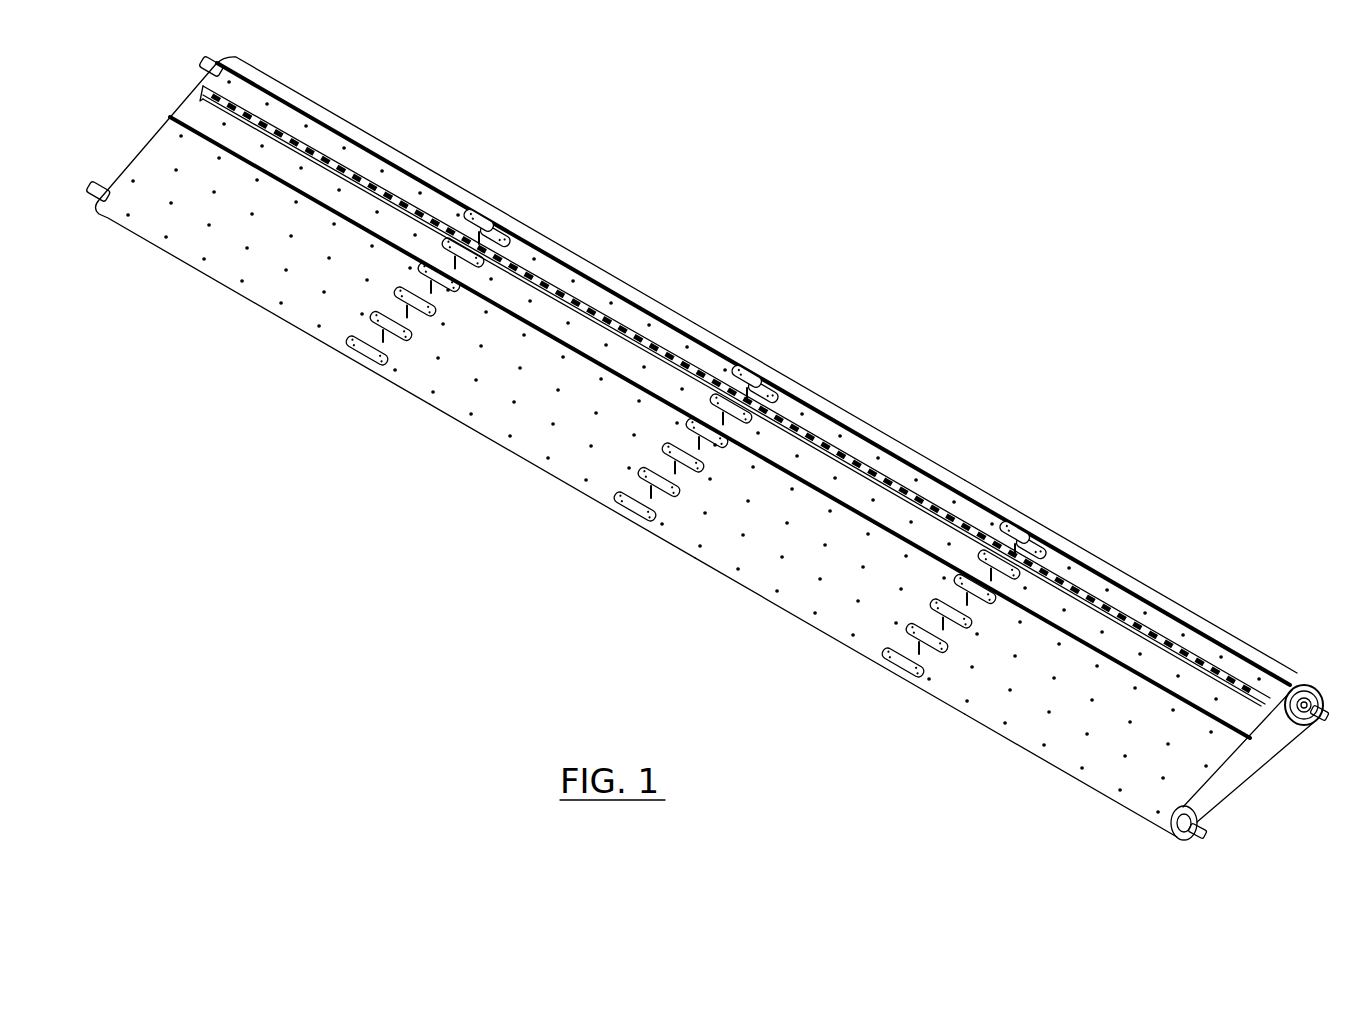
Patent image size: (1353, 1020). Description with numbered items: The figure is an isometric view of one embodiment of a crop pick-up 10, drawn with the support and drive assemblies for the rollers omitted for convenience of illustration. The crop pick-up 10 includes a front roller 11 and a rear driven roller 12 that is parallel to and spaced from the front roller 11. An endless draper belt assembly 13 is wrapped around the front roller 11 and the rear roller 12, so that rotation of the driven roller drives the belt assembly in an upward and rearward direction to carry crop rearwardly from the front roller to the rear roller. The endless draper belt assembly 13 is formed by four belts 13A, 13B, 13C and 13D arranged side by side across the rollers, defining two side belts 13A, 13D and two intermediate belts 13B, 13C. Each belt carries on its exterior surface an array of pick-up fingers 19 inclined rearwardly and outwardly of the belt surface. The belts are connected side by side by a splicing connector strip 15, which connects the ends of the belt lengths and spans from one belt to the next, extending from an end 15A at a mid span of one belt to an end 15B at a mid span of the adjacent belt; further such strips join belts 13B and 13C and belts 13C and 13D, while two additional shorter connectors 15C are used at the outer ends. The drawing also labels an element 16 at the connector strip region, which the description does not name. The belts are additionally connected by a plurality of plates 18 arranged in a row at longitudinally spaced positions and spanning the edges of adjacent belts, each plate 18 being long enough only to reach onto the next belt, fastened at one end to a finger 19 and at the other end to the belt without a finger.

The crop pick-up 10 is at (544, 596).
The front roller 11 is at (1180, 818).
The rear driven roller 12 is at (1289, 690).
The endless draper belt assembly 13 is at (384, 476).
The side belt 13A is at (252, 293).
The intermediate belt 13B is at (487, 432).
The intermediate belt 13C is at (712, 570).
The side belt 13D is at (990, 718).
The splicing connector strip 15 is at (568, 302).
The end of splicing connector 15A is at (340, 165).
The end of splicing connector 15B is at (603, 322).
The outer connector 15C is at (246, 112).
The connector plate 16 is at (522, 277).
The plate 18 is at (640, 505).
The pick-up finger 19 is at (612, 503).